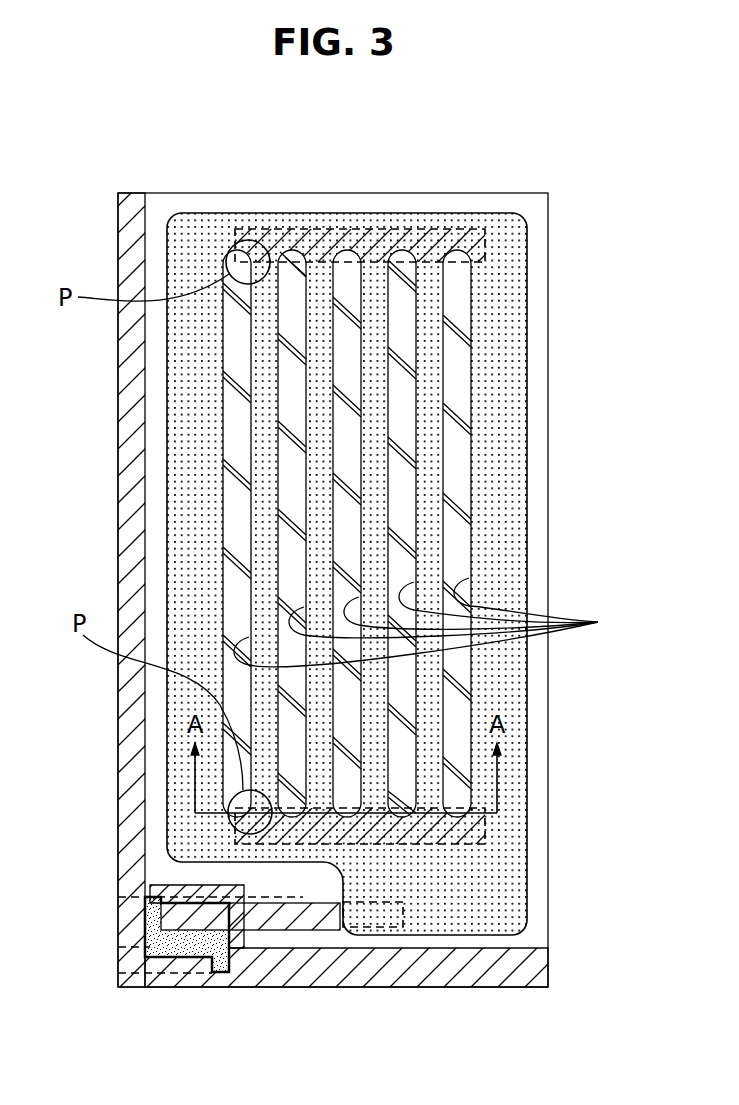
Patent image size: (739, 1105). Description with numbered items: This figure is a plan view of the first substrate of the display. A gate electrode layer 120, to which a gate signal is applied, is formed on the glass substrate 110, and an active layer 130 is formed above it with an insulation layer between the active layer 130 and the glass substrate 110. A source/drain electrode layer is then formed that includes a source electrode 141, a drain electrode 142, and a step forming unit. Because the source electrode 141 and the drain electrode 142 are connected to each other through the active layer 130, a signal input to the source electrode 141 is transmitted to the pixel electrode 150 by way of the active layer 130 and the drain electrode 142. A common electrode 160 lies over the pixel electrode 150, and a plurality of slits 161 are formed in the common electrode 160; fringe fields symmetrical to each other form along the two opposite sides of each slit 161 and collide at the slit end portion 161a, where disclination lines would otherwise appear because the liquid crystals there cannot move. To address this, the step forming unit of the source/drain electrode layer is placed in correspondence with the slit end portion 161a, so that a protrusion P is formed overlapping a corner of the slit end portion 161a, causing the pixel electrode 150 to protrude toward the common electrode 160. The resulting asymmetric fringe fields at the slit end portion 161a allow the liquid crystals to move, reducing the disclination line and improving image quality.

The glass substrate 110 is at (540, 415).
The gate electrode layer 120 is at (400, 987).
The active layer 130 is at (248, 962).
The source electrode 141 is at (126, 814).
The drain electrode 142 is at (311, 925).
The pixel electrode 150 is at (452, 326).
The common electrode 160 is at (520, 532).
The slits 161 is at (600, 622).
The slit end portion 161a is at (250, 252).